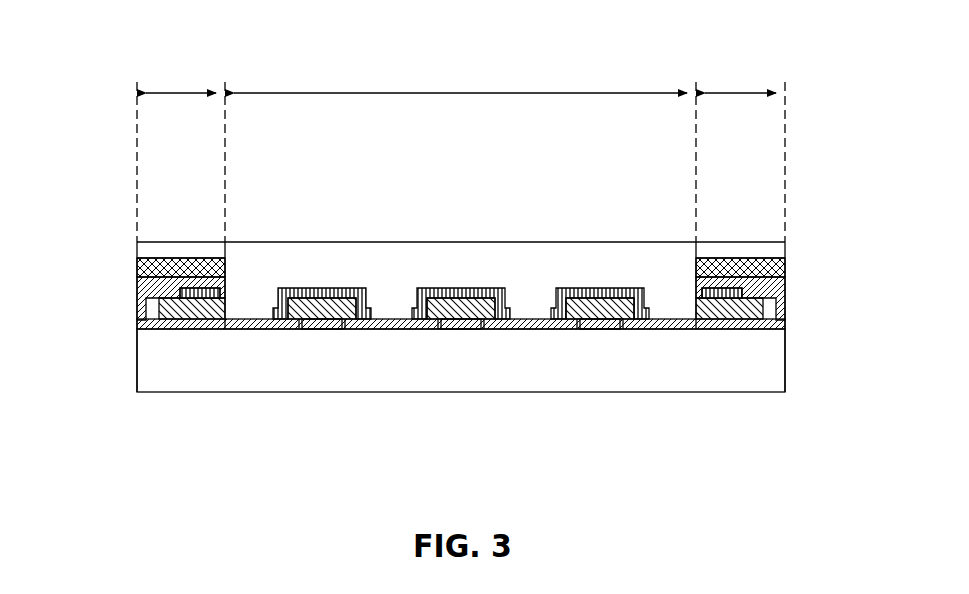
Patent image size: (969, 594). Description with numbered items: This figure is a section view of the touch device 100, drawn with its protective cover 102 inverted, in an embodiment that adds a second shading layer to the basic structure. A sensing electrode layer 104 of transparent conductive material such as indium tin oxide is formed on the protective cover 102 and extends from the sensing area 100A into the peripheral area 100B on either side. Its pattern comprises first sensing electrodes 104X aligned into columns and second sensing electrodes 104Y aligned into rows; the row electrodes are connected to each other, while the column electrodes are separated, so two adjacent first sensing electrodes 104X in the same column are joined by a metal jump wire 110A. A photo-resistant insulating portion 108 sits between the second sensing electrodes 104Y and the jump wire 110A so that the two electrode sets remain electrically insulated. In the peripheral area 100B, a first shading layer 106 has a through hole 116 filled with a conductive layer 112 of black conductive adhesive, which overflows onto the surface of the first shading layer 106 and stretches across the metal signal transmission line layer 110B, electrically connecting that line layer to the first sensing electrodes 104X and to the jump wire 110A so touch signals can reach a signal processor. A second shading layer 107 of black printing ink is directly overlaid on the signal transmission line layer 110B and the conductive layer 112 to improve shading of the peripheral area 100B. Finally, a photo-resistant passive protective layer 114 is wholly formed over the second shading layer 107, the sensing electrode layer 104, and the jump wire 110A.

The touch device 100 is at (806, 128).
The sensing area 100A is at (460, 73).
The peripheral area 100B is at (461, 148).
The protective cover 102 is at (172, 365).
The sensing electrode layer 104 is at (128, 324).
The first sensing electrodes 104X is at (230, 330).
The second sensing electrodes 104Y is at (310, 330).
The first shading layer 106 is at (137, 310).
The second shading layer 107 is at (137, 266).
The insulating portion 108 is at (305, 297).
The jump wire 110A is at (358, 288).
The signal transmission line layer 110B is at (215, 286).
The conductive layer 112 is at (137, 286).
The passive protective layer 114 is at (418, 275).
The through hole 116 is at (137, 250).